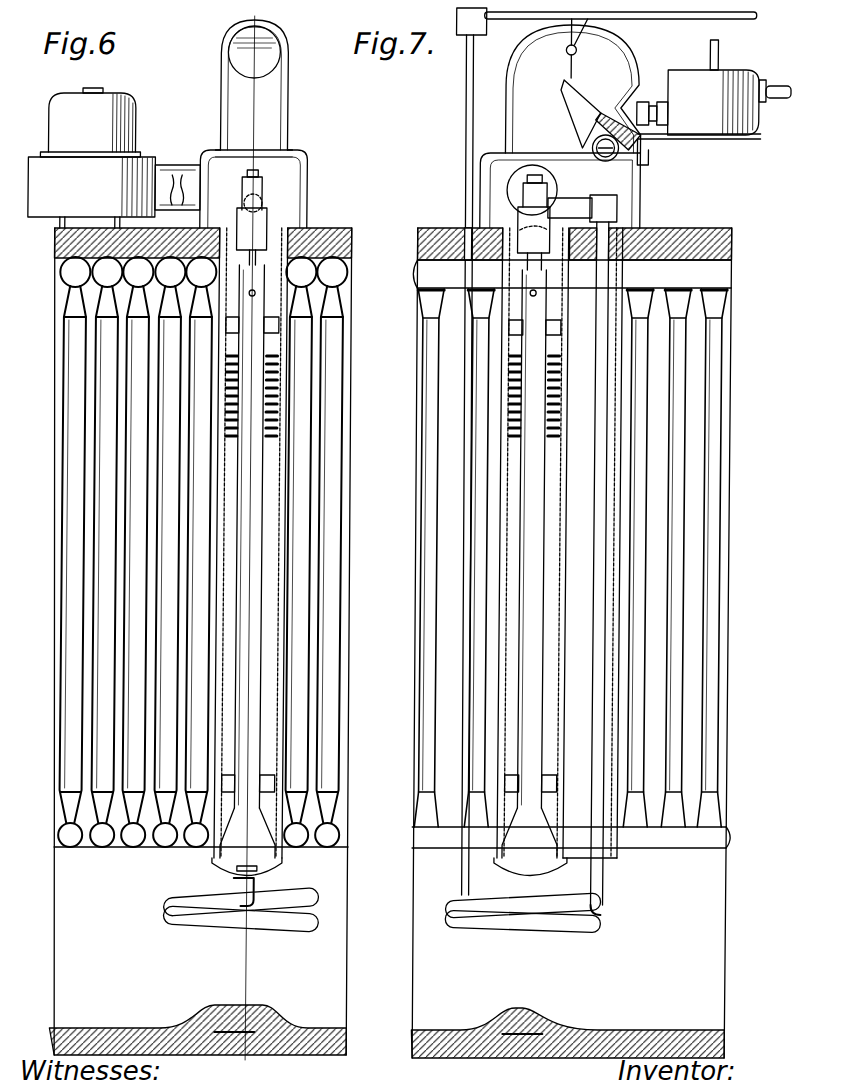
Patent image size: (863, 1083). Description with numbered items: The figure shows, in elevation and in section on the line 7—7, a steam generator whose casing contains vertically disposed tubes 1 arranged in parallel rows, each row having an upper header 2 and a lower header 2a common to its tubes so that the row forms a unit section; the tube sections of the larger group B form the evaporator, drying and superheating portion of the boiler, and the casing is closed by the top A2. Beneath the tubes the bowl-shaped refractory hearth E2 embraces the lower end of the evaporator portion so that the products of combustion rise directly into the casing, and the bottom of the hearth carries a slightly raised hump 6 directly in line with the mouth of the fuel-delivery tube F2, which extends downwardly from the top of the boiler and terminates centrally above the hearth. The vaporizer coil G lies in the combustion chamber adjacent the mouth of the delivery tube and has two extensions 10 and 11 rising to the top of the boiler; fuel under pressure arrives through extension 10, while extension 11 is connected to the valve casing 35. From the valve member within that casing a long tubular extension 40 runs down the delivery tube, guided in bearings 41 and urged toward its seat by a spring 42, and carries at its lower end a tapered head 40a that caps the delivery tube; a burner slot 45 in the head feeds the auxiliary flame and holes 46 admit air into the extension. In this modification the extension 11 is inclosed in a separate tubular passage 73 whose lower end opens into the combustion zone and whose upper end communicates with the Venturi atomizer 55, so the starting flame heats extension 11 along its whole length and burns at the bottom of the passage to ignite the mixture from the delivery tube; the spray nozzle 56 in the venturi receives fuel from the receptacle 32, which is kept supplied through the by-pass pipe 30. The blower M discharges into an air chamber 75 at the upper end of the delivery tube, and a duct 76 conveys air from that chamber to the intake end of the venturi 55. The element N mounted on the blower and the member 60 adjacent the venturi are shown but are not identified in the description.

In FIG. 6, the tubes 1 is at (327, 766).
In FIG. 7, the tubes 1 is at (486, 598).
In FIG. 6, the upper header 2 is at (108, 285).
In FIG. 6, the lower header 2a is at (108, 842).
In FIG. 7, the lower header 2a is at (688, 848).
In FIG. 6, the hump 6 is at (256, 1012).
In FIG. 7, the hump 6 is at (533, 1006).
In FIG. 6, the line 7— 7 is at (272, 12).
In FIG. 7, the vaporizer extension 10 is at (464, 66).
In FIG. 7, the vaporizer extension 11 is at (608, 264).
In FIG. 7, the by-pass pipe 30 is at (718, 62).
In FIG. 7, the fuel receptacle 32 is at (714, 117).
In FIG. 6, the valve casing 35 is at (265, 216).
In FIG. 7, the valve casing 35 is at (548, 190).
In FIG. 6, the tubular valve extension 40 is at (250, 633).
In FIG. 7, the tubular valve extension 40 is at (532, 688).
In FIG. 6, the tapered head 40a is at (222, 866).
In FIG. 7, the tapered head 40a is at (585, 905).
In FIG. 6, the bearings 41 is at (278, 330).
In FIG. 7, the bearings 41 is at (568, 330).
In FIG. 6, the spring 42 is at (280, 404).
In FIG. 7, the spring 42 is at (564, 405).
In FIG. 6, the burner slot 45 is at (268, 868).
In FIG. 7, the burner slot 45 is at (500, 872).
In FIG. 6, the air holes 46 is at (270, 298).
In FIG. 7, the air holes 46 is at (530, 296).
In FIG. 7, the Venturi atomizer 55 is at (640, 153).
In FIG. 7, the spray nozzle 56 is at (646, 110).
In FIG. 7, the lever 60 is at (582, 136).
In FIG. 7, the tubular passage 73 is at (612, 584).
In FIG. 7, the air chamber 75 is at (482, 186).
In FIG. 6, the duct 76 is at (288, 114).
In FIG. 7, the duct 76 is at (506, 100).
In FIG. 6, the top of casing A2 is at (340, 232).
In FIG. 7, the top of casing A2 is at (688, 228).
In FIG. 6, the tube group B is at (126, 458).
In FIG. 6, the hearth E2 is at (318, 994).
In FIG. 7, the hearth E2 is at (694, 1002).
In FIG. 6, the fuel-delivery tube F2 is at (286, 512).
In FIG. 7, the fuel-delivery tube F2 is at (496, 543).
In FIG. 6, the vaporizer coil G is at (230, 928).
In FIG. 7, the vaporizer coil G is at (500, 922).
In FIG. 6, the blower M is at (114, 190).
In FIG. 6, the motor housing N is at (92, 120).